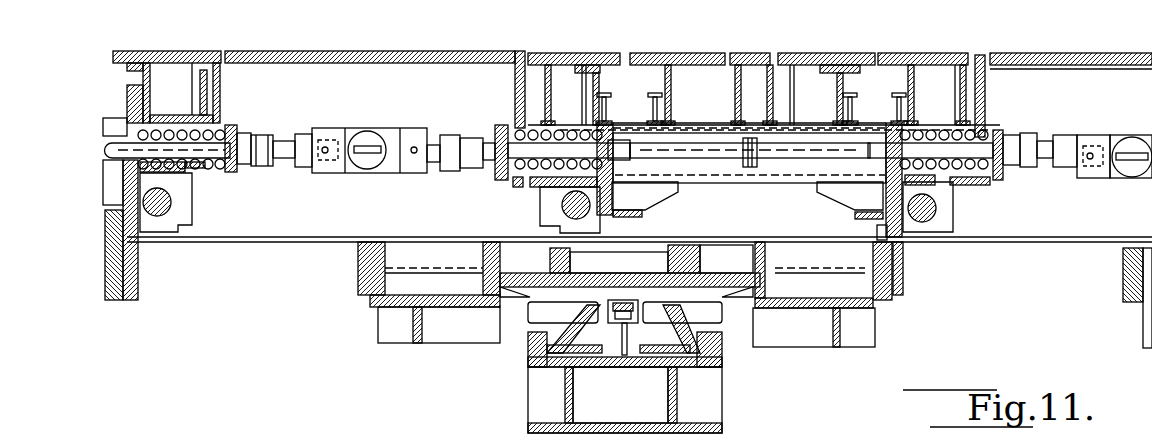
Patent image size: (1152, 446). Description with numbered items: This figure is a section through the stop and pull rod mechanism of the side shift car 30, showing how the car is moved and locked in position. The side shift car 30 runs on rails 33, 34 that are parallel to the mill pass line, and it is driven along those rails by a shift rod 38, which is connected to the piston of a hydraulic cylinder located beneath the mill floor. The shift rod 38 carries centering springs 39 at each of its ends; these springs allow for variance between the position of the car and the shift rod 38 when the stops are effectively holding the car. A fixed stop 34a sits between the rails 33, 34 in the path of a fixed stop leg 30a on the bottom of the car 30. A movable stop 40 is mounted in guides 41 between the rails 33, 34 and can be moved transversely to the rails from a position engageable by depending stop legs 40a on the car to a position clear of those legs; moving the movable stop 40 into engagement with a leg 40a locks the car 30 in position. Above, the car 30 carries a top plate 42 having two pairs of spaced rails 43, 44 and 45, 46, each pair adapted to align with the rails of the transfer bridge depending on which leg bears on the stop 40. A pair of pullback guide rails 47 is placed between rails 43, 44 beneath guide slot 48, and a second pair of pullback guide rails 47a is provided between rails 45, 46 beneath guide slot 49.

The side shift car 30 is at (698, 168).
The fixed stop leg 30a is at (850, 200).
The rail 33 is at (639, 273).
The rail 34 is at (1093, 240).
The fixed stop 34a is at (905, 233).
The shift rod 38 is at (780, 152).
The centering springs 39 is at (525, 178).
The movable stop 40 is at (662, 233).
The depending stop legs 40a is at (645, 199).
The guides 41 is at (716, 248).
The top plate 42 is at (823, 58).
The rail 43 is at (519, 52).
The rail 44 is at (740, 57).
The rail 45 is at (766, 58).
The rail 46 is at (983, 57).
The pullback guide rails 47 is at (655, 93).
The pullback guide rails 47a is at (902, 92).
The guide slot 48 is at (625, 55).
The guide slot 49 is at (876, 60).